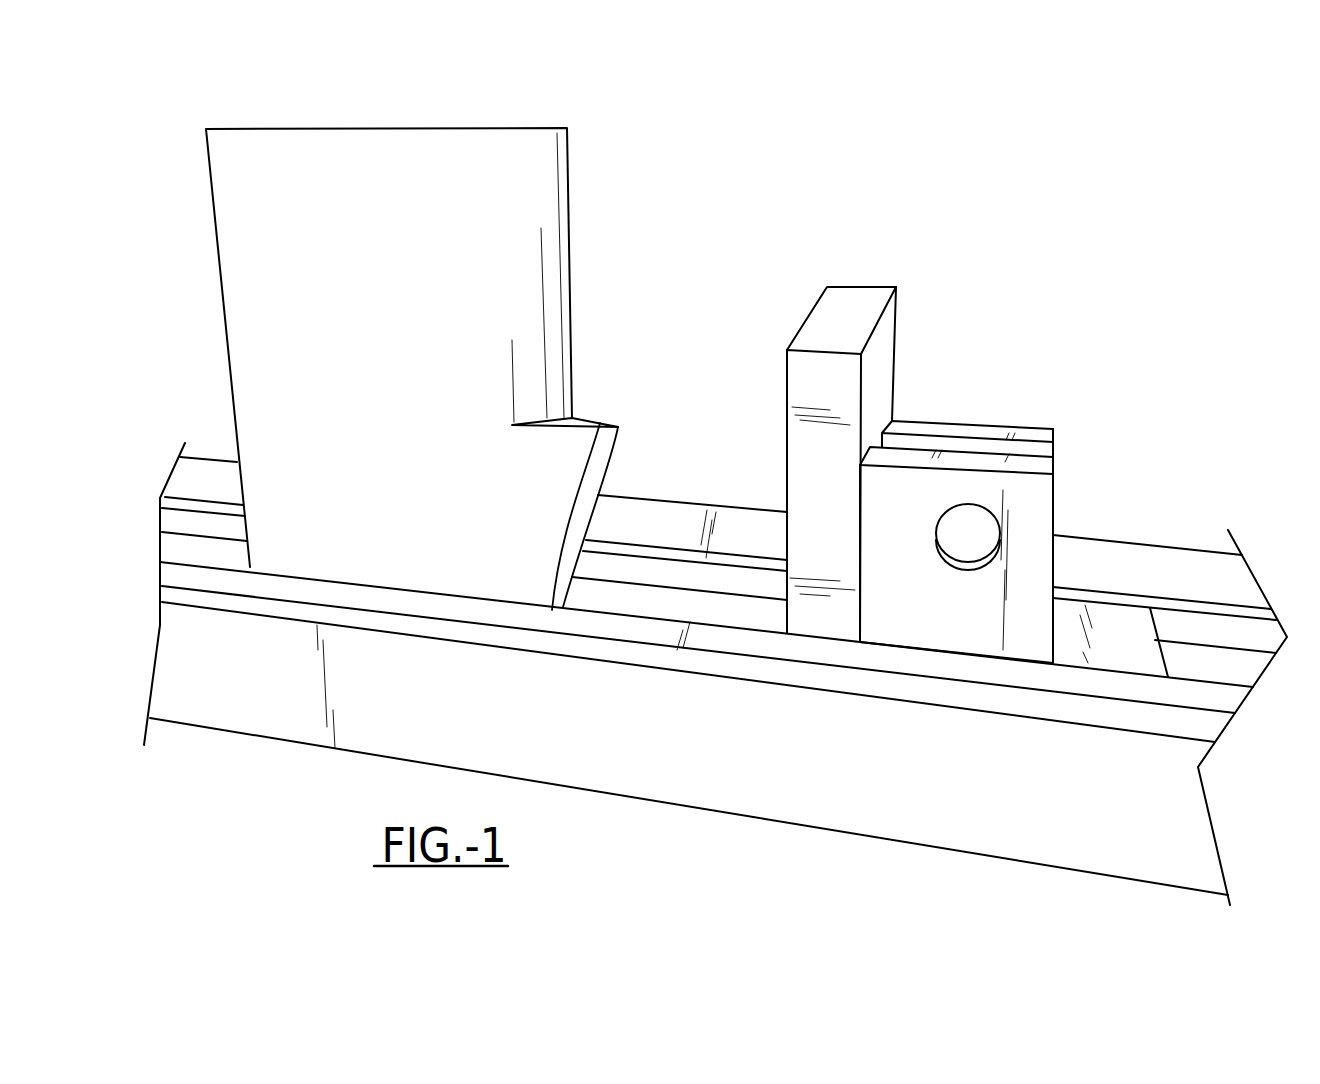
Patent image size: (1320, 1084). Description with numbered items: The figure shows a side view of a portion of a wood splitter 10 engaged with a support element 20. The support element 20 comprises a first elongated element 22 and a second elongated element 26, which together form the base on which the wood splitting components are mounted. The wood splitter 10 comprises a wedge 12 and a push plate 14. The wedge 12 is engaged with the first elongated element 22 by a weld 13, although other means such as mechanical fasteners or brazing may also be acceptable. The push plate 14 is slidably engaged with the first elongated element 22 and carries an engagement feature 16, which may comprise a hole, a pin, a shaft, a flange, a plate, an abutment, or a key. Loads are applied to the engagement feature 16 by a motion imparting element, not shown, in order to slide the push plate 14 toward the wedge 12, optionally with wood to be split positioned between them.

The wood splitter 10 is at (670, 182).
The wedge 12 is at (545, 217).
The weld 13 is at (600, 423).
The push plate 14 is at (787, 378).
The engagement feature 16 is at (969, 500).
The support element 20 is at (1113, 528).
The first elongated element 22 is at (585, 628).
The second elongated element 26 is at (643, 693).